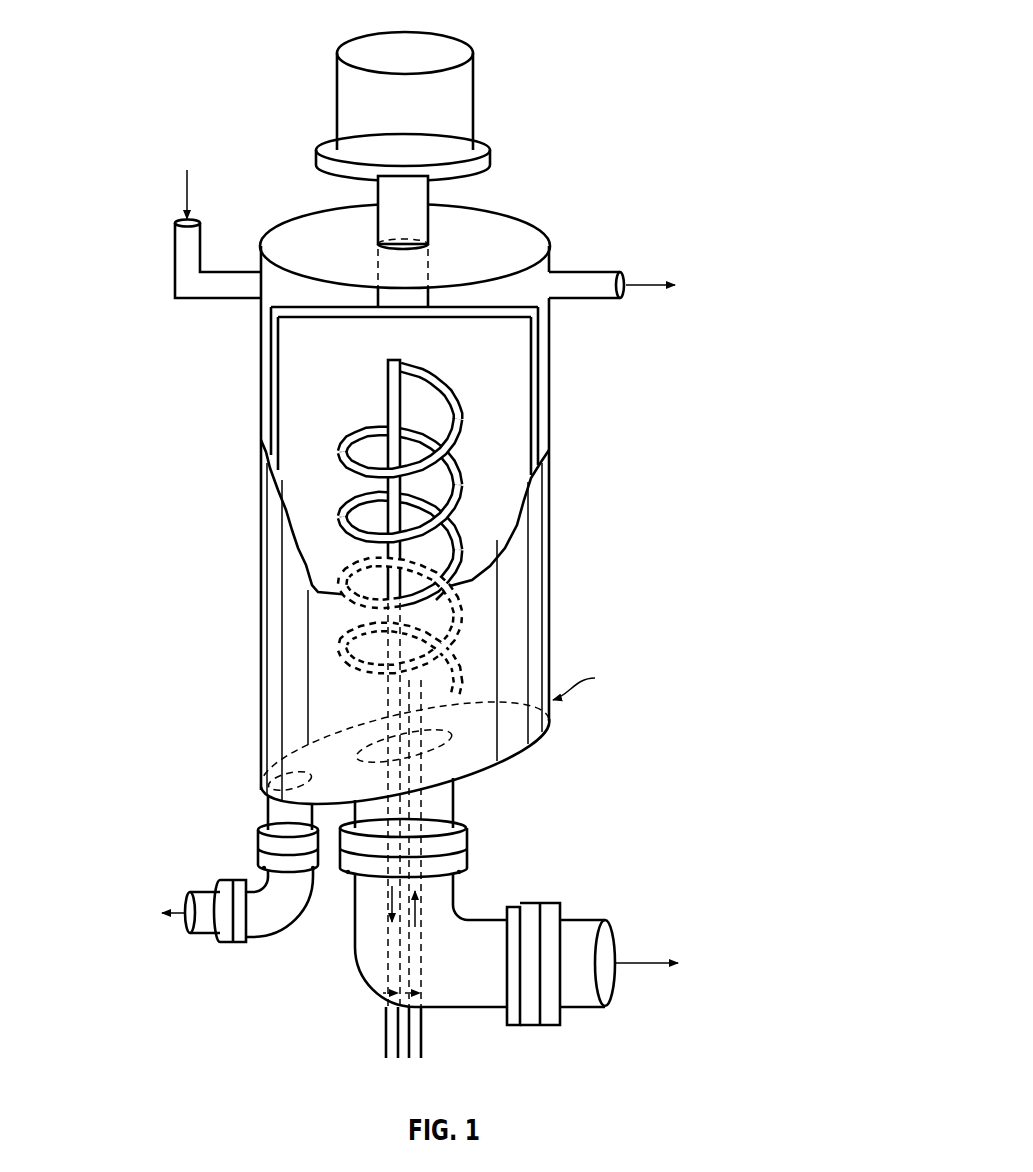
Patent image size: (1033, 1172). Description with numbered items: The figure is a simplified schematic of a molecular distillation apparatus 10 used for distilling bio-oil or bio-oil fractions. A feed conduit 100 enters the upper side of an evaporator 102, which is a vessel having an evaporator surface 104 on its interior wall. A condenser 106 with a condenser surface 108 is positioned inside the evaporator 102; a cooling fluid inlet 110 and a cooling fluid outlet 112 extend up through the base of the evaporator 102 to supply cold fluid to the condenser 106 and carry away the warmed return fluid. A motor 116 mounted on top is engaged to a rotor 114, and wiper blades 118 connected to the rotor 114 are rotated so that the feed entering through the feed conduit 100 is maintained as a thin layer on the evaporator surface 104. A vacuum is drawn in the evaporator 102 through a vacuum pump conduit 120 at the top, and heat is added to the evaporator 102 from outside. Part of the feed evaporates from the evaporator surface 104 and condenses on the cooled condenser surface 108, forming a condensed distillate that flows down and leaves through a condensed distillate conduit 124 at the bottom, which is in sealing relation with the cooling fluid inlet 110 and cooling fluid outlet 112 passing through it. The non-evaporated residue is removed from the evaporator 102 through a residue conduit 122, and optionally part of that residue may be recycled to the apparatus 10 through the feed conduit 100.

The molecular distillation apparatus 10 is at (204, 51).
The feed conduit 100 is at (175, 262).
The evaporator 102 is at (423, 498).
The evaporator surface 104 is at (268, 702).
The condenser 106 is at (363, 512).
The condenser surface 108 is at (575, 485).
The cooling fluid inlet 110 is at (432, 913).
The cooling fluid outlet 112 is at (380, 902).
The rotor 114 is at (420, 197).
The motor 116 is at (343, 55).
The wiper blades 118 is at (265, 430).
The vacuum pump conduit 120 is at (585, 268).
The residue conduit 122 is at (200, 935).
The condensed distillate conduit 124 is at (583, 920).